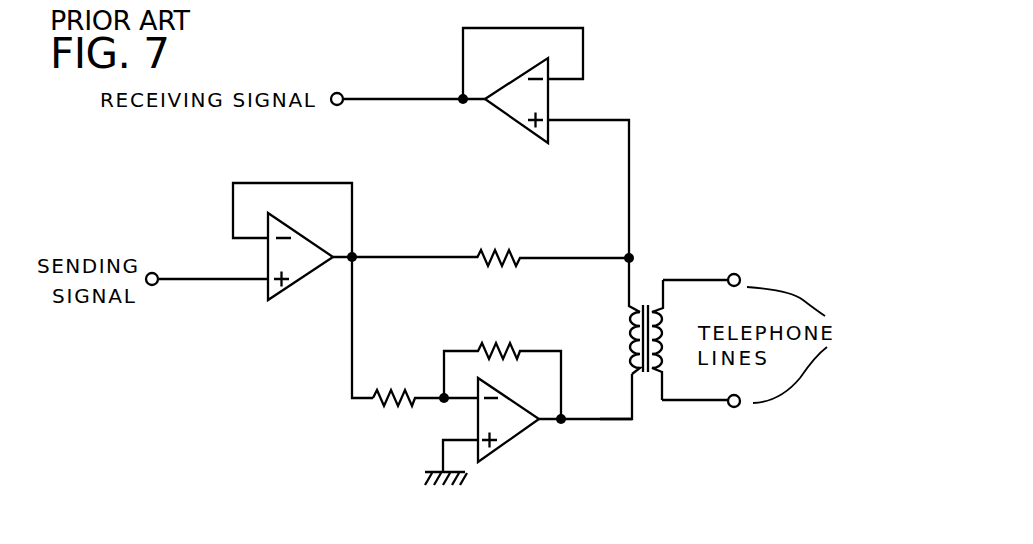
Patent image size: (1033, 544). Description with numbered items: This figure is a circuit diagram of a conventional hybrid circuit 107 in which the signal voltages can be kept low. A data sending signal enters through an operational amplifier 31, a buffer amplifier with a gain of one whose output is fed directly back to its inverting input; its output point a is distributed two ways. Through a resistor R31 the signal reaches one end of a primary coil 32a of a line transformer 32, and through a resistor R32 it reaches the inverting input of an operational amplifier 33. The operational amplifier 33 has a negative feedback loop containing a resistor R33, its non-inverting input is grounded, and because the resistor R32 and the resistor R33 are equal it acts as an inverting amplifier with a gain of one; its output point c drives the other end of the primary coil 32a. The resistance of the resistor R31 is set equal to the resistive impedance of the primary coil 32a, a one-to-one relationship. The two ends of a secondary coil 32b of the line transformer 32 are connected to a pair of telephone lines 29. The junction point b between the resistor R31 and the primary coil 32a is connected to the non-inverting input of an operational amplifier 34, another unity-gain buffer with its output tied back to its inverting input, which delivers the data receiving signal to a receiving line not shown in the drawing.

The hybrid circuit 107 is at (659, 122).
The operational amplifier 34 is at (518, 110).
The operational amplifier 31 is at (296, 280).
The operational amplifier 33 is at (520, 427).
The line transformer 32 is at (639, 306).
The primary coil 32a is at (628, 314).
The secondary coil 32b is at (657, 313).
The telephone lines 29 is at (713, 277).
The output point a is at (355, 252).
The junction point b is at (626, 252).
The output point c is at (618, 422).
The resistor R31 is at (553, 240).
The resistor R32 is at (425, 381).
The resistor R33 is at (502, 365).